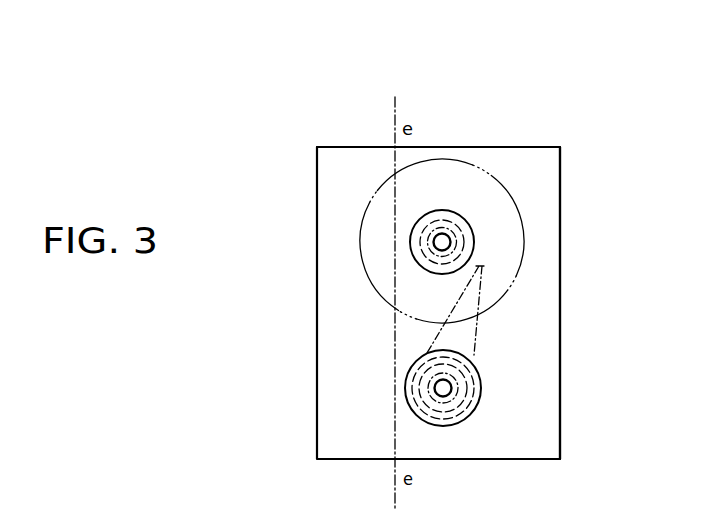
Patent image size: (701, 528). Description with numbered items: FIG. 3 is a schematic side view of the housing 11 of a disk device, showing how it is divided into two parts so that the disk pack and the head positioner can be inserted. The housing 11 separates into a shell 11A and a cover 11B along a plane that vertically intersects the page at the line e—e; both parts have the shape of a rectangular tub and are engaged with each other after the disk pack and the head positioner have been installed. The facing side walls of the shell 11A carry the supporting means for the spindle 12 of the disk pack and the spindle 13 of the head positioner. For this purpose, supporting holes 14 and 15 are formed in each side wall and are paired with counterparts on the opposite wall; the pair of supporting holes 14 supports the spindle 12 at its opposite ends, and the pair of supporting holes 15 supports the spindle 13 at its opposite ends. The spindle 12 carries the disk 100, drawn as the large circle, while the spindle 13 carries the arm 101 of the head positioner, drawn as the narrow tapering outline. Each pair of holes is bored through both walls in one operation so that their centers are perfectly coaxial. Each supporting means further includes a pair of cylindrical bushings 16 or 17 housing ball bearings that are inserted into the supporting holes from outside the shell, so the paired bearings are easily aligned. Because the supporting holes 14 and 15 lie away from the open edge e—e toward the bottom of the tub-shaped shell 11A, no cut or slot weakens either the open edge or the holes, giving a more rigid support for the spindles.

The housing 11 is at (317, 188).
The shell 11A is at (560, 200).
The cover 11B is at (337, 147).
The spindle 12 is at (460, 242).
The spindle 13 is at (455, 397).
The supporting hole 14 is at (458, 225).
The supporting hole 15 is at (445, 412).
The cylindrical bushing 16 is at (418, 267).
The cylindrical bushing 17 is at (405, 407).
The disk 100 is at (465, 162).
The arm 101 is at (475, 356).